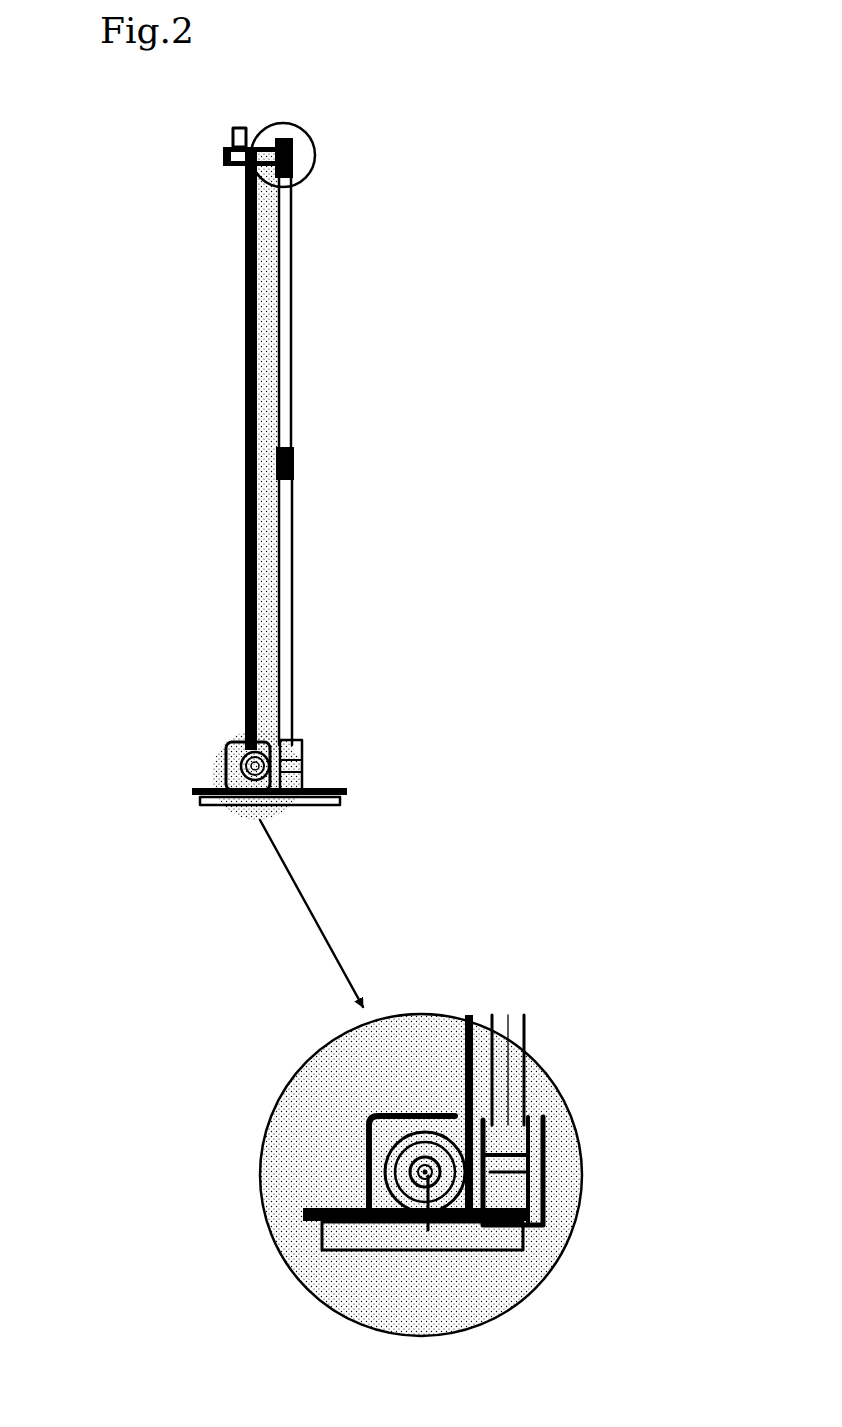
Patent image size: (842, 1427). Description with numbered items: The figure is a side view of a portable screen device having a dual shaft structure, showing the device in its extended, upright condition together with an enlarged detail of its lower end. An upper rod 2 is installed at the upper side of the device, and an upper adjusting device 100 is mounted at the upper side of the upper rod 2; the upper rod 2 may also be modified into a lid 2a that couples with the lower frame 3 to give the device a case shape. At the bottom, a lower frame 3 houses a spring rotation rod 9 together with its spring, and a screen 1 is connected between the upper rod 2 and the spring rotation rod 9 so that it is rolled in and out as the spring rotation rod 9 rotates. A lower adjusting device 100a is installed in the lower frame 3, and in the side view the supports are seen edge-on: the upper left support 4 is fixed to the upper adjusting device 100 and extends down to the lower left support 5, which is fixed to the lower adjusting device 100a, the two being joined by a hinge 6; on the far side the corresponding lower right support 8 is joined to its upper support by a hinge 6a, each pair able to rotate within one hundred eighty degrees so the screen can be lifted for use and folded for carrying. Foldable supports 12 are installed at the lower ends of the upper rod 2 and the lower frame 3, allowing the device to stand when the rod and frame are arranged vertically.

The screen 1 is at (247, 505).
The upper rod 2 is at (232, 162).
The lid 2a is at (236, 140).
The lower frame 3 is at (220, 770).
The upper left support 4 is at (292, 312).
The lower left support 5 is at (480, 792).
The hinge 6 is at (356, 462).
The hinge 6a is at (294, 458).
The lower right support 8 is at (294, 630).
The spring rotation rod 9 is at (428, 1230).
The foldable supports 12 is at (340, 806).
The upper adjusting device 100 is at (316, 152).
The lower adjusting device 100a is at (303, 758).